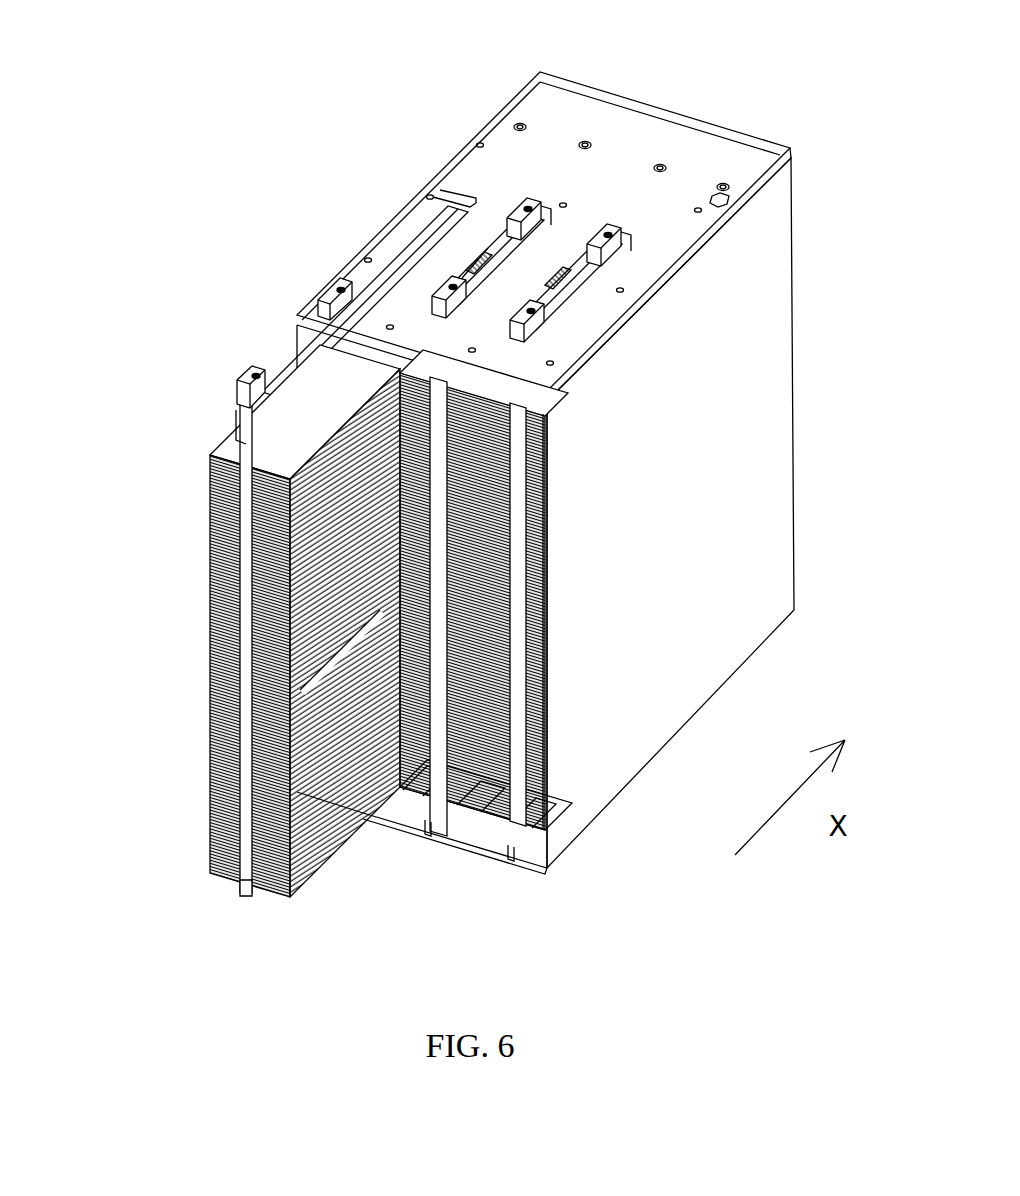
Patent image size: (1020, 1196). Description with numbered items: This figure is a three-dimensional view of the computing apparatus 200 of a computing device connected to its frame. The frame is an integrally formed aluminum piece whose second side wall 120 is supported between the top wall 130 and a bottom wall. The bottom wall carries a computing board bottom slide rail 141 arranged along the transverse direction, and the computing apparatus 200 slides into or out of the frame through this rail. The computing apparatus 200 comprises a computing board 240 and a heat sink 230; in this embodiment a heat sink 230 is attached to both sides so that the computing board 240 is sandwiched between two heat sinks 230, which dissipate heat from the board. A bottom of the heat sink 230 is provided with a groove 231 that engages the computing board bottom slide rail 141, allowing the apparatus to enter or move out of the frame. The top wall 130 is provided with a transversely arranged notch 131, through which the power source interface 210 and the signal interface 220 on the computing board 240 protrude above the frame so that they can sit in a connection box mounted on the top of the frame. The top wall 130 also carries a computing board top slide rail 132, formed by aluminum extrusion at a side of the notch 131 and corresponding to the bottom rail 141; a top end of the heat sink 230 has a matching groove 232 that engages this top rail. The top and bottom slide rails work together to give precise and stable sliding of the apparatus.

The second side wall 120 is at (775, 405).
The top wall 130 is at (700, 143).
The notch 131 is at (420, 240).
The computing board top slide rail 132 is at (330, 310).
The computing board bottom slide rail 141 is at (430, 816).
The computing apparatus 200 is at (213, 593).
The power source interface 210 is at (521, 212).
The signal interface 220 is at (477, 262).
The heat sink 230 is at (327, 430).
The groove 231 is at (262, 896).
The groove 232 is at (240, 392).
The computing board 240 is at (240, 435).